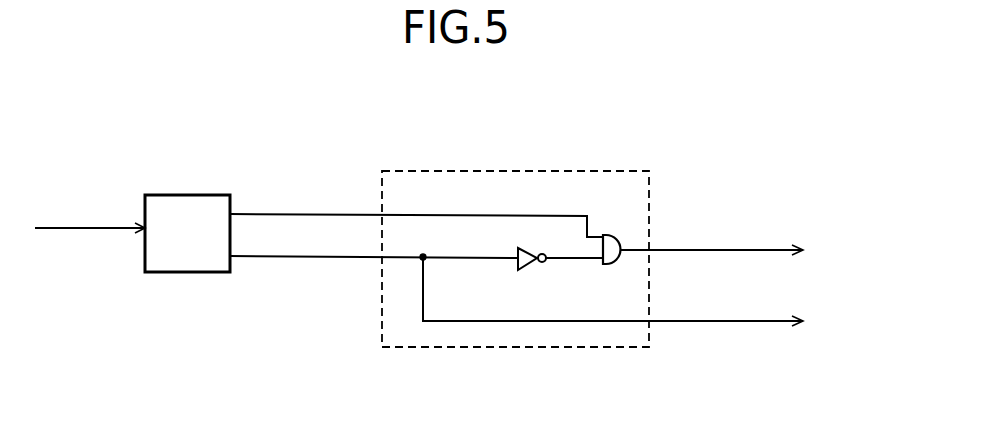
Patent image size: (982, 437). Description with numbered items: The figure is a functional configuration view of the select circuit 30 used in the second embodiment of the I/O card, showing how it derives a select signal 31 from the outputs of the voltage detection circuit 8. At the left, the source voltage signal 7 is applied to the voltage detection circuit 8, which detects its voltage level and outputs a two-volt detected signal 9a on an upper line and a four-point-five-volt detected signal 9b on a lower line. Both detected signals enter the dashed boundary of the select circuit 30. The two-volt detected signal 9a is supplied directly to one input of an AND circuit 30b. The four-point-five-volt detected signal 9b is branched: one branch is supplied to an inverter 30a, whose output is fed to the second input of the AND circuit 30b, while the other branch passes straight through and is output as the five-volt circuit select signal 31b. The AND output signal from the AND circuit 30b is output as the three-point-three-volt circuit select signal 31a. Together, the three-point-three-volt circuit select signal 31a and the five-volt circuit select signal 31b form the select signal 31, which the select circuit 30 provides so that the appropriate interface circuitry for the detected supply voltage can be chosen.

The source voltage signal 7 is at (77, 228).
The voltage detection circuit 8 is at (188, 195).
The 2V detected signal 9a is at (260, 213).
The 4.5V detected signal 9b is at (258, 256).
The select circuit 30 is at (503, 170).
The inverter 30a is at (523, 268).
The AND circuit 30b is at (606, 236).
The select signal 31 is at (644, 286).
The 3.3V circuit select signal 31a is at (683, 249).
The 5.0V circuit select signal 31b is at (682, 322).